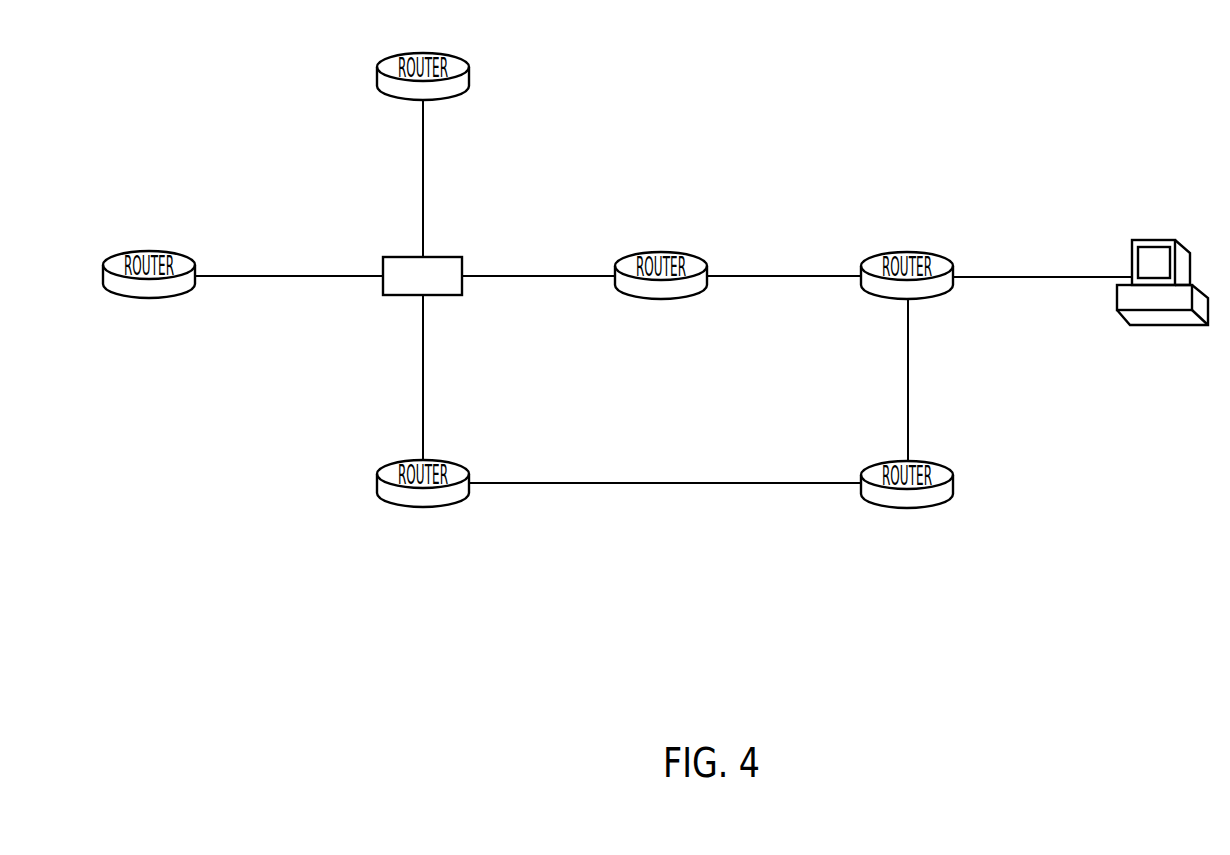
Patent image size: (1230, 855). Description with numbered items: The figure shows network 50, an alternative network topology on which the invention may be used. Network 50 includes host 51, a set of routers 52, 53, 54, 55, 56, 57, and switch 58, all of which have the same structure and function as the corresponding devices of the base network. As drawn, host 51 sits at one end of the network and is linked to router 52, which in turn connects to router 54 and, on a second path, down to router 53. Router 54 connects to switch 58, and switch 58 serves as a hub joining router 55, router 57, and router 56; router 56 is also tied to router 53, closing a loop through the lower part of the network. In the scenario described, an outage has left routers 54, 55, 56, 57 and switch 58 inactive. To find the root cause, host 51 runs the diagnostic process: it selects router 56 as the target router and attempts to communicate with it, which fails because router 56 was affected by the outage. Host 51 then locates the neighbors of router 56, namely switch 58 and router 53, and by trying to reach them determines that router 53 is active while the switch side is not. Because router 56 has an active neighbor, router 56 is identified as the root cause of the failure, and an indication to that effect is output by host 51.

The network 50 is at (751, 124).
The host 51 is at (1132, 252).
The router 52 is at (934, 300).
The router 53 is at (940, 506).
The router 54 is at (668, 301).
The router 55 is at (376, 78).
The router 56 is at (376, 481).
The router 57 is at (154, 299).
The switch 58 is at (445, 257).